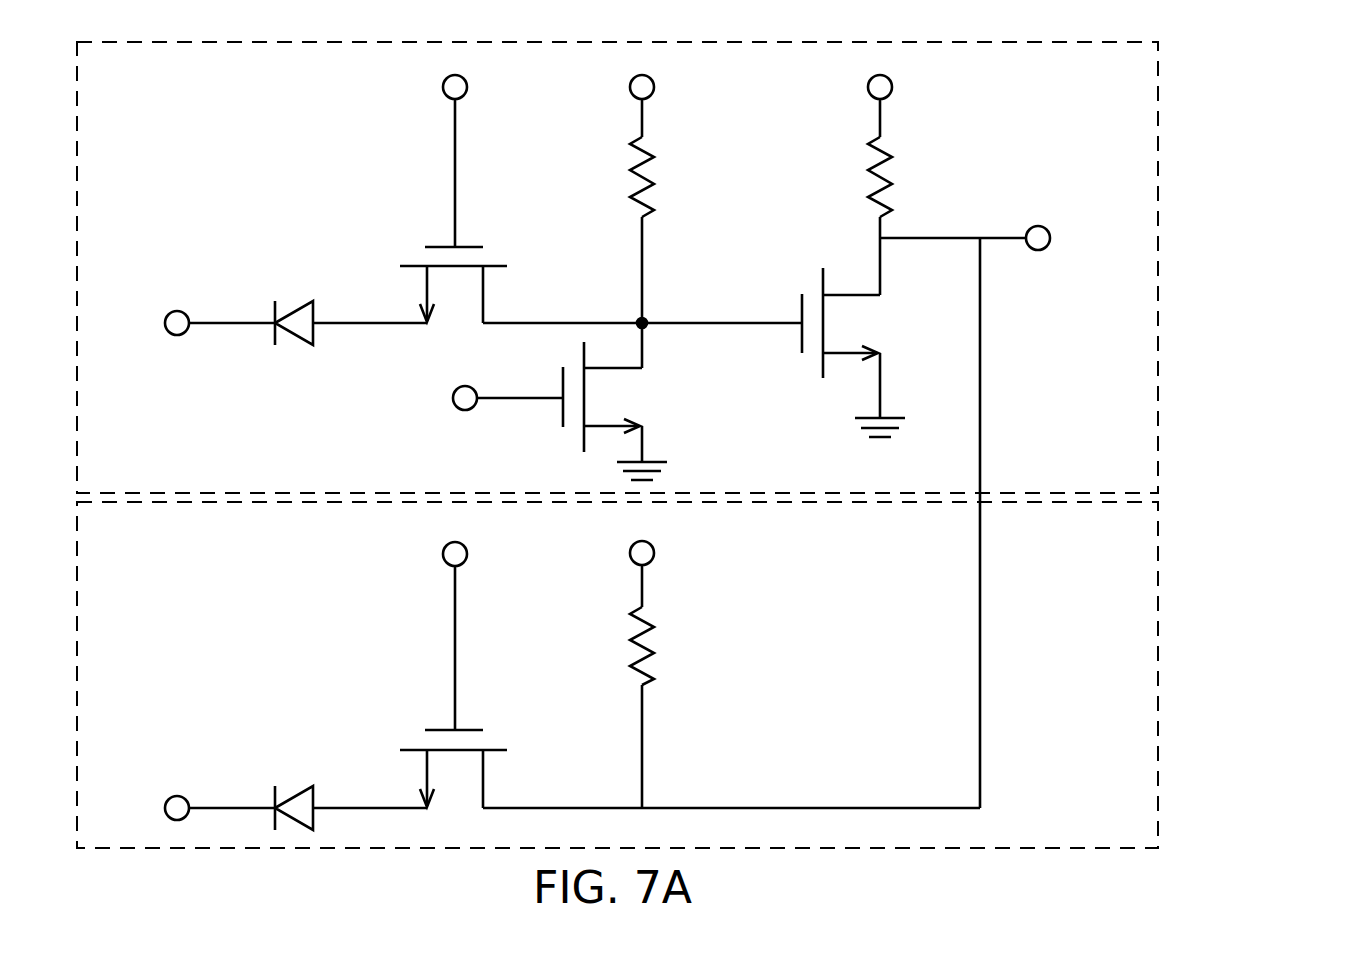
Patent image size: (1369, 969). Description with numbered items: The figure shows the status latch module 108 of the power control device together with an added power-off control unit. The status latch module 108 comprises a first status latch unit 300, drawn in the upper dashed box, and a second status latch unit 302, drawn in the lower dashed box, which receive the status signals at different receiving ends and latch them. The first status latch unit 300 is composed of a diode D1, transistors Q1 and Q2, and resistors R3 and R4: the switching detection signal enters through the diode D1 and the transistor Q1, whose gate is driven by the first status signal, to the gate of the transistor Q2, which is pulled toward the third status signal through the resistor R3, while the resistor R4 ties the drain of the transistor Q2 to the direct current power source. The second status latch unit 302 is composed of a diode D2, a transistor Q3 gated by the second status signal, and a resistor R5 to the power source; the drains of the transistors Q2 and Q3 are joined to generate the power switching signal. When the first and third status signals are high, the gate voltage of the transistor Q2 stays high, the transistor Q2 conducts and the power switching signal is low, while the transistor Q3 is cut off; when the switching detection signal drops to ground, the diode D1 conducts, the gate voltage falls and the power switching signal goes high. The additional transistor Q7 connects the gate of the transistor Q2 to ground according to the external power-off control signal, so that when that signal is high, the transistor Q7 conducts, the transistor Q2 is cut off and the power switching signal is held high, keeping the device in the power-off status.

The status latch module 108 is at (1210, 200).
The first status latch unit 300 is at (1158, 118).
The second status latch unit 302 is at (1159, 594).
The diode D1 is at (302, 310).
The diode D2 is at (302, 795).
The transistor Q1 is at (453, 227).
The transistor Q2 is at (853, 352).
The transistor Q3 is at (453, 704).
The transistor Q7 is at (615, 411).
The resistor R3 is at (662, 177).
The resistor R4 is at (900, 177).
The resistor R5 is at (662, 646).